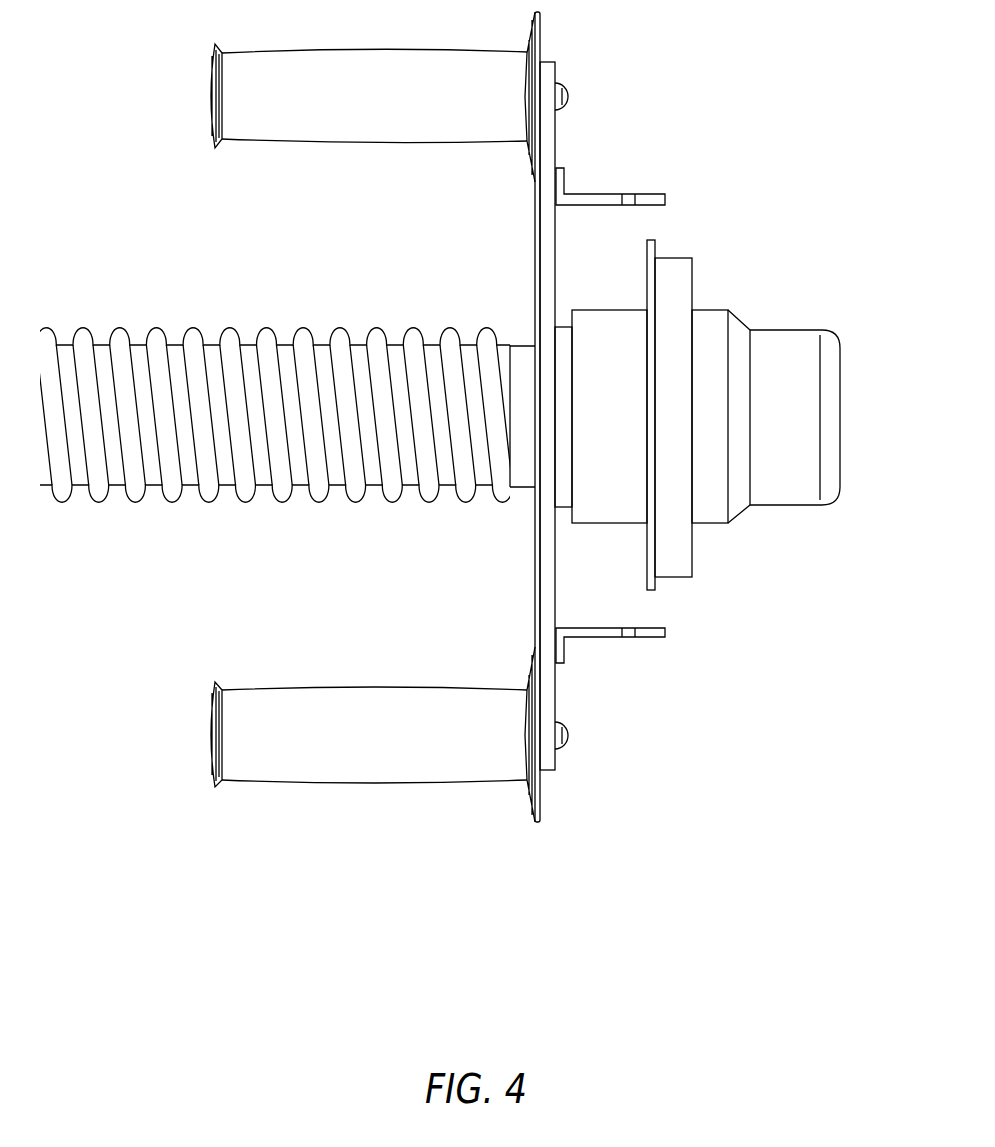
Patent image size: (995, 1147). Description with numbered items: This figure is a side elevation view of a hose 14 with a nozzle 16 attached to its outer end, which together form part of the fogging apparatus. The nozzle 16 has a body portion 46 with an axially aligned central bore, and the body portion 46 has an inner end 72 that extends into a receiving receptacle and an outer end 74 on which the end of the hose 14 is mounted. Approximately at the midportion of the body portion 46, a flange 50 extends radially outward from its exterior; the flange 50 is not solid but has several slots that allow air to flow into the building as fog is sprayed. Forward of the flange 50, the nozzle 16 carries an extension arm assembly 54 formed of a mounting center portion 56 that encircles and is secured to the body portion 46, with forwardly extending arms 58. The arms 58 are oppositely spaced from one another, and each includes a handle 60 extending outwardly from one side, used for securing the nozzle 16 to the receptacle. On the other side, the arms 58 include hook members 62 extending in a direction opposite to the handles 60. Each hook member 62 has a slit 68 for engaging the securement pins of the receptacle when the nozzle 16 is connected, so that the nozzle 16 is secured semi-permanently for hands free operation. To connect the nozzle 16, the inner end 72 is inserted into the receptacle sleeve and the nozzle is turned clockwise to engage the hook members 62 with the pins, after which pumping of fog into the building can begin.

The hose 14 is at (213, 502).
The nozzle 16 is at (715, 277).
The body portion 46 is at (717, 525).
The flange 50 is at (674, 257).
The extension arm assembly 54 is at (537, 622).
The mounting center portion 56 is at (545, 448).
The arms 58 is at (558, 253).
The handle 60 is at (390, 145).
The hook members 62 is at (590, 192).
The slit 68 is at (630, 193).
The inner end 72 is at (790, 507).
The outer end 74 is at (526, 345).